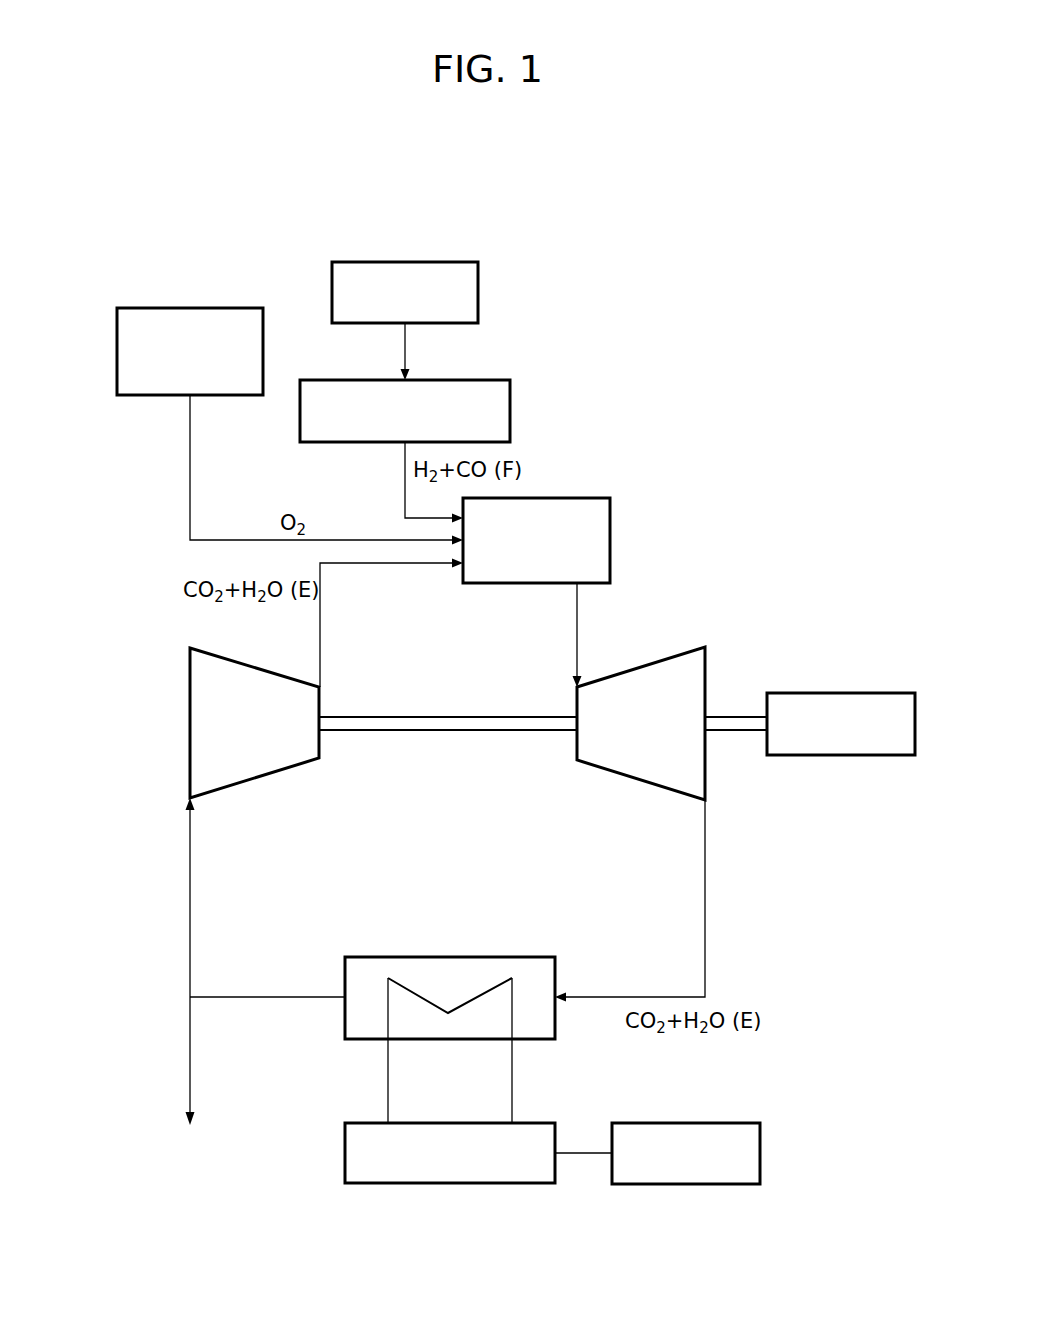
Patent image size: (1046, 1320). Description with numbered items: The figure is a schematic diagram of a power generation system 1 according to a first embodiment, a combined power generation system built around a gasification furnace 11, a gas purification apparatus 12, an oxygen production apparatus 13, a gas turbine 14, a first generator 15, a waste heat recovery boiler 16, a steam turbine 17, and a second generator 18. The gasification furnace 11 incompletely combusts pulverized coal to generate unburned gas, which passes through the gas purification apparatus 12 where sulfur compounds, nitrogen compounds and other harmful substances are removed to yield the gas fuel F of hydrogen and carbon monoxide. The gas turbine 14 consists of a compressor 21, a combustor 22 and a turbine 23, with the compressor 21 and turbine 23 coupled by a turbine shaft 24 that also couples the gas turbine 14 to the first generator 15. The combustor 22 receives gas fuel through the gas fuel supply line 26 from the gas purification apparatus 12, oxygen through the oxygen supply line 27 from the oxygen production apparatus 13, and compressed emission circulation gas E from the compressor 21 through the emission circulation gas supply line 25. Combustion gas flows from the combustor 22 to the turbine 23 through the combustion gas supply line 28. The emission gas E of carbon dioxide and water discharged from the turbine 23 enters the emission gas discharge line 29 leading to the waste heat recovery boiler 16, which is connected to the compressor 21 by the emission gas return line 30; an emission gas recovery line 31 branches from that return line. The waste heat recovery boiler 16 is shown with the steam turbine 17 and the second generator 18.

The power generation system 1 is at (732, 238).
The gasification furnace 11 is at (416, 262).
The gas purification apparatus 12 is at (487, 380).
The oxygen production apparatus 13 is at (197, 308).
The gas turbine 14 is at (165, 620).
The first generator 15 is at (850, 693).
The waste heat recovery boiler 16 is at (475, 957).
The steam turbine 17 is at (537, 1123).
The second generator 18 is at (722, 1123).
The compressor 21 is at (190, 722).
The combustor 22 is at (610, 528).
The turbine 23 is at (708, 668).
The turbine shaft 24 is at (441, 732).
The emission circulation gas supply line 25 is at (320, 622).
The gas fuel supply line 26 is at (405, 476).
The oxygen supply line 27 is at (190, 462).
The combustion gas supply line 28 is at (577, 612).
The emission gas discharge line 29 is at (705, 895).
The emission gas return line 30 is at (267, 997).
The emission gas recovery line 31 is at (190, 1056).